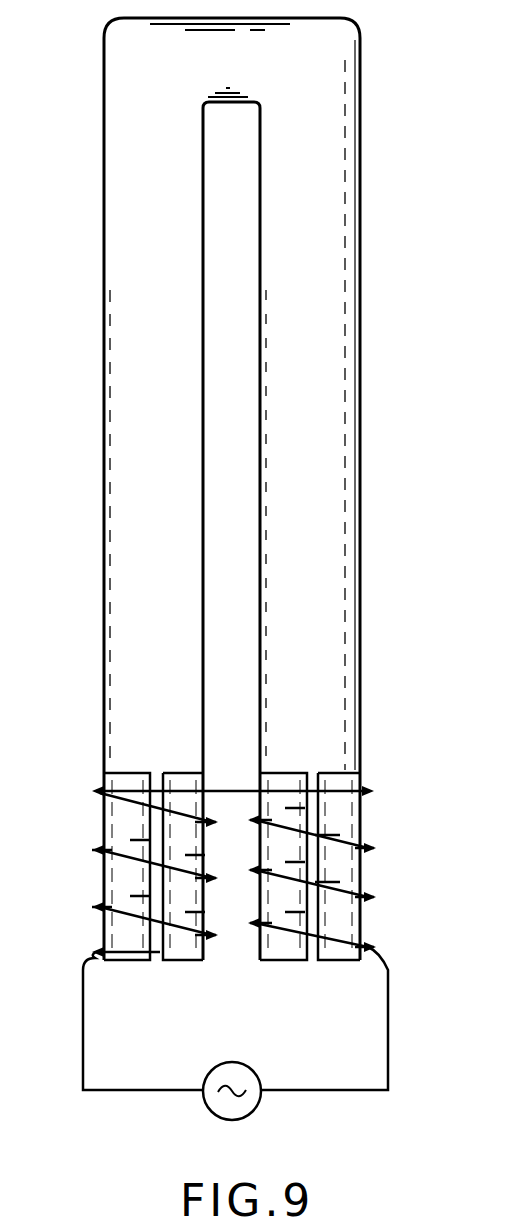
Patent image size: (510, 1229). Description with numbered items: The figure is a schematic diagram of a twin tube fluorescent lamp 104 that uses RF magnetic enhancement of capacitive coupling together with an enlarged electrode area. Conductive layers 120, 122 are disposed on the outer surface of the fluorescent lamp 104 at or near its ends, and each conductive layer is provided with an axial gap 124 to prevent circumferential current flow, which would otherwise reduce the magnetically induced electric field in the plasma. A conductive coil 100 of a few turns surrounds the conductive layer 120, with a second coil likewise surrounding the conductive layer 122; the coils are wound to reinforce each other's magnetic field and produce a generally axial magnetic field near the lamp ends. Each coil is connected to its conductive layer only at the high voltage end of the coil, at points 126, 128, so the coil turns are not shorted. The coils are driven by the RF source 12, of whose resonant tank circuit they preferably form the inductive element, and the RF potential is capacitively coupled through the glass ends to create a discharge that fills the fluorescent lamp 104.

The twin tube fluorescent lamp 104 is at (345, 558).
The conductive layer 120 is at (105, 840).
The conductive coil 100 is at (108, 870).
The conductive layer 122 is at (350, 870).
The axial gap 124 is at (105, 928).
The connection point 126 is at (100, 952).
The connection point 128 is at (368, 947).
The RF source 12 is at (258, 1072).